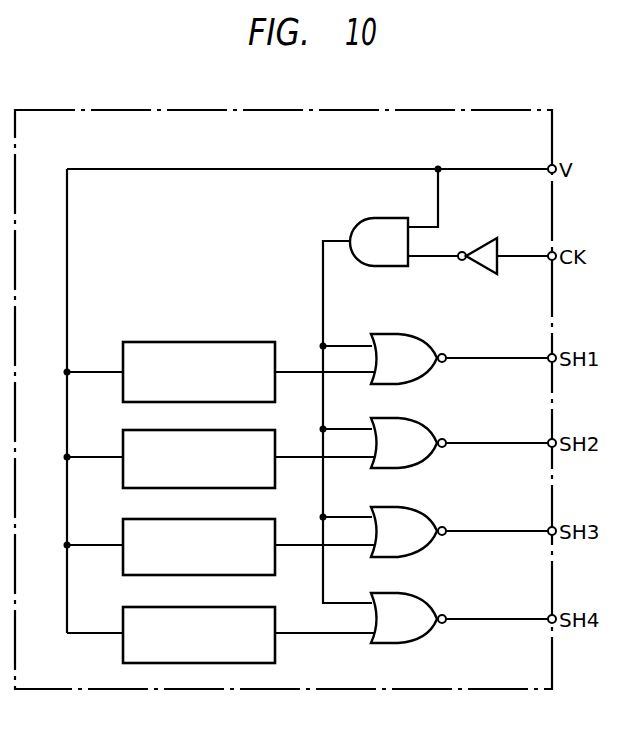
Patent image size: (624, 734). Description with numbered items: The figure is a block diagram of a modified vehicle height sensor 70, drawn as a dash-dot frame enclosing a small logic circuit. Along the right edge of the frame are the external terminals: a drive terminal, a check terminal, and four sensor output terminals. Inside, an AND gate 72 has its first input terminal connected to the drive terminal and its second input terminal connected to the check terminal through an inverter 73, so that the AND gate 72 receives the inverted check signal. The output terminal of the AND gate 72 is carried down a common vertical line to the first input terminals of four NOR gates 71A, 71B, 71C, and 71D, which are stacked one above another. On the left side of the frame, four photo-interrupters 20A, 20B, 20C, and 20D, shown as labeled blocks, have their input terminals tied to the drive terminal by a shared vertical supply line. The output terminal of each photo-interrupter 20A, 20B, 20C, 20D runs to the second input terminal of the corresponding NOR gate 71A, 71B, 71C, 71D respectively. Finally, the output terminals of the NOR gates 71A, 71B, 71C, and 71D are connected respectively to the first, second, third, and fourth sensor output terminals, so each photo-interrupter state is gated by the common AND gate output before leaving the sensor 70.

The modified vehicle height sensor 70 is at (393, 110).
The AND gate 72 is at (360, 222).
The inverter 73 is at (497, 269).
The NOR gate 71A is at (433, 321).
The NOR gate 71B is at (453, 415).
The NOR gate 71C is at (432, 512).
The NOR gate 71D is at (432, 602).
The photo-interrupter 20A is at (123, 382).
The photo-interrupter 20B is at (123, 468).
The photo-interrupter 20C is at (123, 560).
The photo-interrupter 20D is at (123, 644).